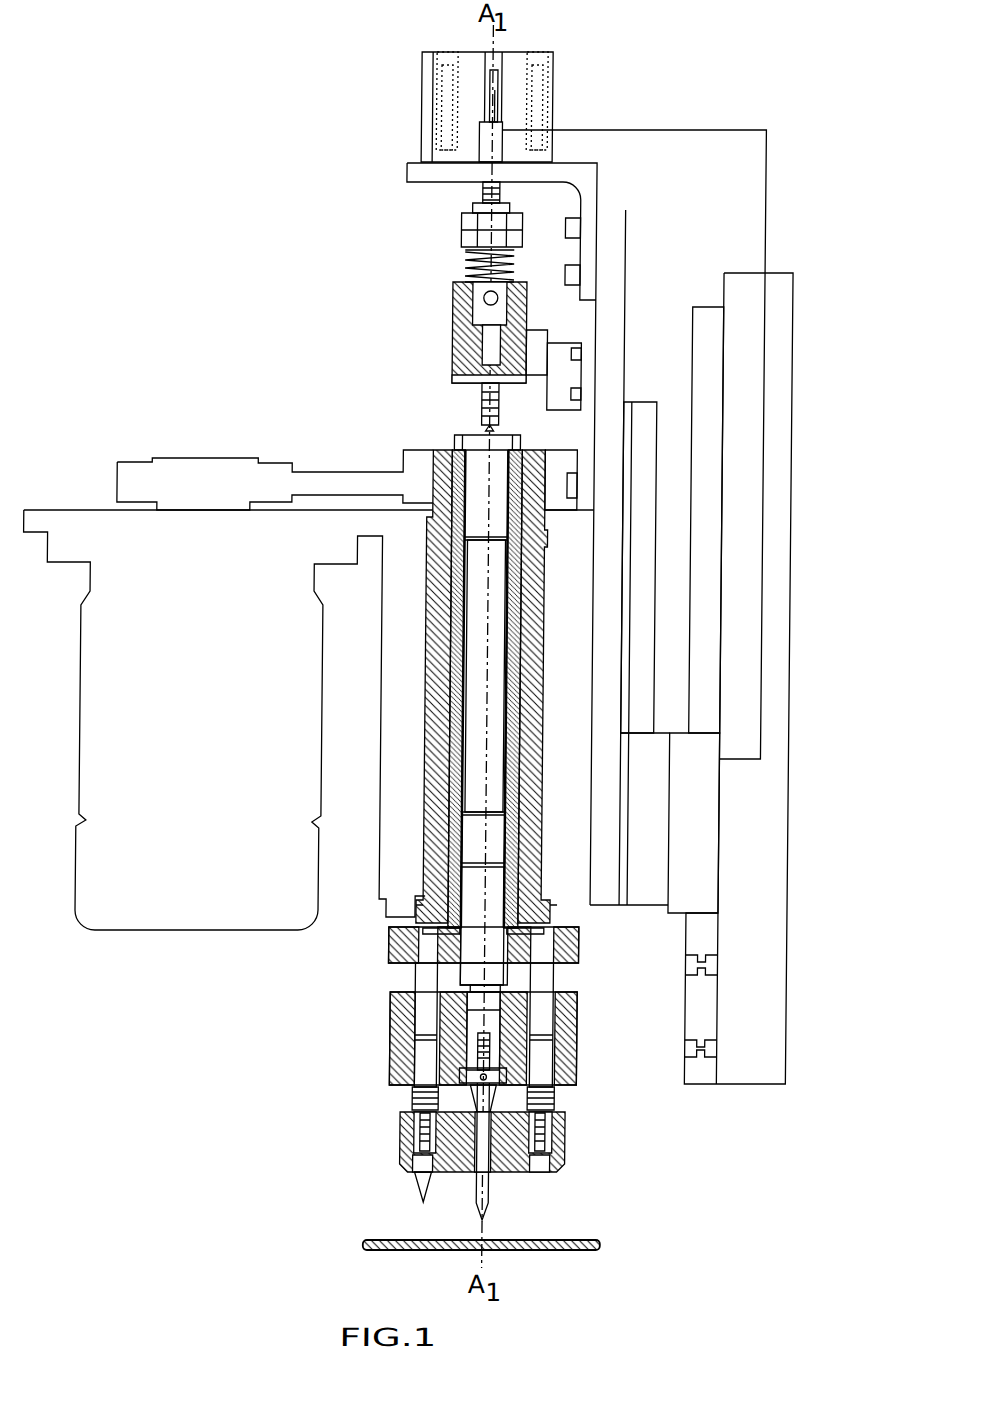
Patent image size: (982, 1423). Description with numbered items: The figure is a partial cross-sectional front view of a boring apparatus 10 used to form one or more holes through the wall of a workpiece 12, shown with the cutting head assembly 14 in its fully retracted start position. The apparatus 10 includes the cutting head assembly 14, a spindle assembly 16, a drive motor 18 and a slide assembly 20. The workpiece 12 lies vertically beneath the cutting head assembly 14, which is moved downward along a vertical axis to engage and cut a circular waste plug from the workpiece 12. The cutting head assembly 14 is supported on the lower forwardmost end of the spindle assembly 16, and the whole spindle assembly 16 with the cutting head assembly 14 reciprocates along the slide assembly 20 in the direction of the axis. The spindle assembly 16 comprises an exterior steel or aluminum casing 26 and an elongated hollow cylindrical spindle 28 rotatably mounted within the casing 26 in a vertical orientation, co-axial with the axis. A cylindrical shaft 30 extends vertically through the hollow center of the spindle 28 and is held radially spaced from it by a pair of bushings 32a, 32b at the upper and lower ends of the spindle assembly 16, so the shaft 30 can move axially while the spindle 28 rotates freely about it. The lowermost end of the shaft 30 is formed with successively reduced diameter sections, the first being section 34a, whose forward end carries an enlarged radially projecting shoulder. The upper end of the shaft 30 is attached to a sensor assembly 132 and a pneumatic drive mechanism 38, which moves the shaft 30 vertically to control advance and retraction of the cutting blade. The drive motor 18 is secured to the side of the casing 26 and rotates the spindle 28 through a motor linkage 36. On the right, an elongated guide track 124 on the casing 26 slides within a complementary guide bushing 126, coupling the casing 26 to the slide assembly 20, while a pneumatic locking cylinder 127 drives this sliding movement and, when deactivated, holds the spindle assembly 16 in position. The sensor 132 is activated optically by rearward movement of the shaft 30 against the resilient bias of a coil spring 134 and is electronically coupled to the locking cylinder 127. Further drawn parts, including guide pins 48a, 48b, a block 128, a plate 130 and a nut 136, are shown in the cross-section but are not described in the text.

The boring apparatus 10 is at (262, 314).
The workpiece 12 is at (538, 1240).
The cutting head assembly 14 is at (351, 925).
The spindle assembly 16 is at (449, 731).
The drive motor 18 is at (185, 746).
The slide assembly 20 is at (760, 978).
The casing 26 is at (404, 660).
The spindle 28 is at (434, 797).
The shaft 30 is at (491, 648).
The bushing 32a is at (452, 460).
The bushing 32b is at (514, 917).
The reduced diameter section 34a is at (493, 773).
The motor linkage 36 is at (215, 470).
The pneumatic drive mechanism 38 is at (516, 102).
The guide pin 48a is at (420, 977).
The guide pin 48b is at (560, 977).
The guide track 124 is at (639, 407).
The guide bushing 126 is at (649, 898).
The pneumatic locking cylinder 127 is at (702, 891).
The mounting block 128 is at (694, 804).
The vertical plate 130 is at (626, 695).
The sensor assembly 132 is at (476, 313).
The coil spring 134 is at (463, 262).
The lock nut 136 is at (455, 223).